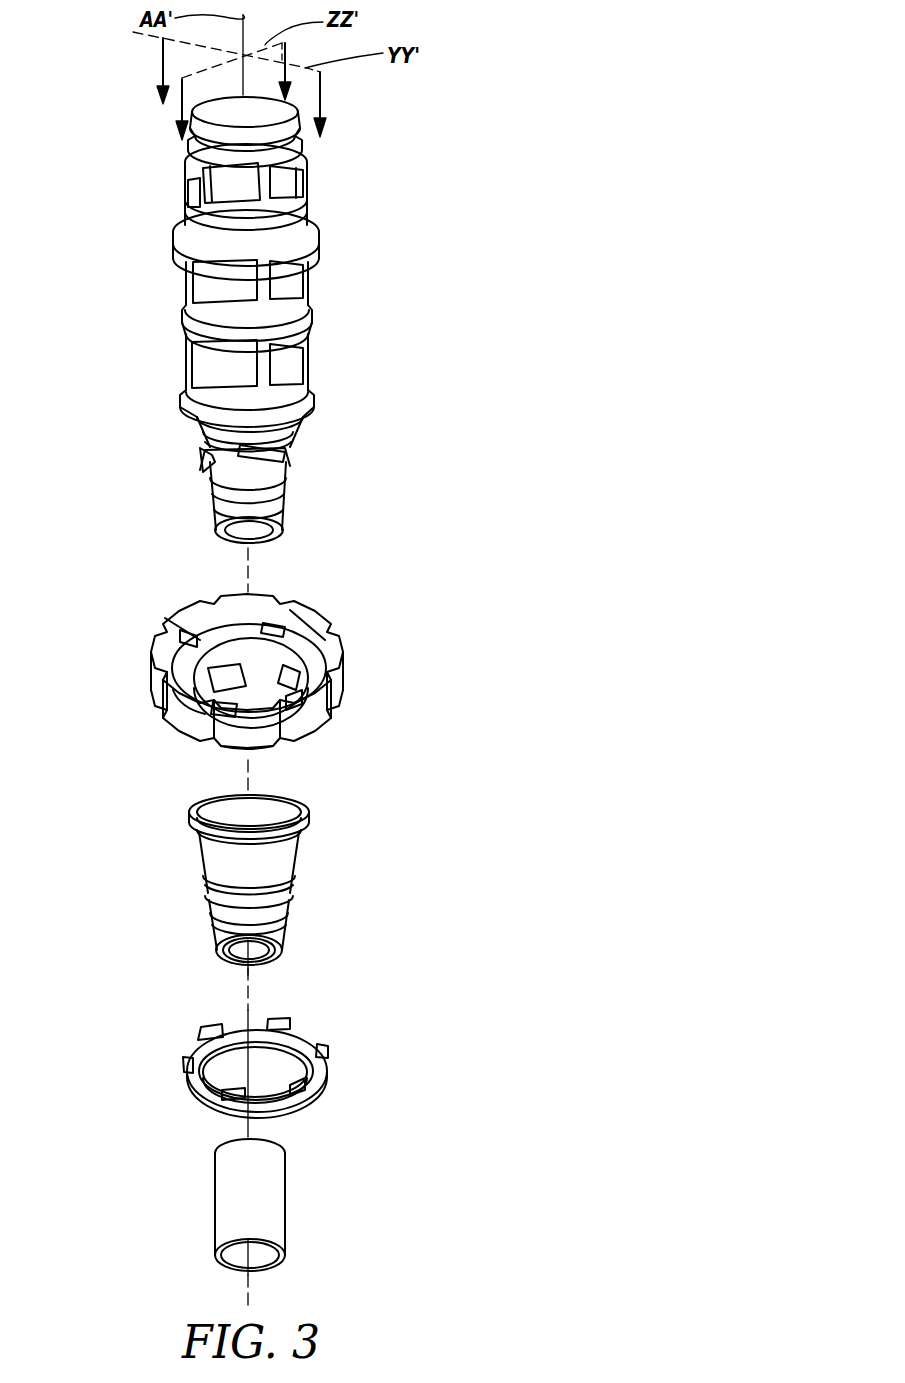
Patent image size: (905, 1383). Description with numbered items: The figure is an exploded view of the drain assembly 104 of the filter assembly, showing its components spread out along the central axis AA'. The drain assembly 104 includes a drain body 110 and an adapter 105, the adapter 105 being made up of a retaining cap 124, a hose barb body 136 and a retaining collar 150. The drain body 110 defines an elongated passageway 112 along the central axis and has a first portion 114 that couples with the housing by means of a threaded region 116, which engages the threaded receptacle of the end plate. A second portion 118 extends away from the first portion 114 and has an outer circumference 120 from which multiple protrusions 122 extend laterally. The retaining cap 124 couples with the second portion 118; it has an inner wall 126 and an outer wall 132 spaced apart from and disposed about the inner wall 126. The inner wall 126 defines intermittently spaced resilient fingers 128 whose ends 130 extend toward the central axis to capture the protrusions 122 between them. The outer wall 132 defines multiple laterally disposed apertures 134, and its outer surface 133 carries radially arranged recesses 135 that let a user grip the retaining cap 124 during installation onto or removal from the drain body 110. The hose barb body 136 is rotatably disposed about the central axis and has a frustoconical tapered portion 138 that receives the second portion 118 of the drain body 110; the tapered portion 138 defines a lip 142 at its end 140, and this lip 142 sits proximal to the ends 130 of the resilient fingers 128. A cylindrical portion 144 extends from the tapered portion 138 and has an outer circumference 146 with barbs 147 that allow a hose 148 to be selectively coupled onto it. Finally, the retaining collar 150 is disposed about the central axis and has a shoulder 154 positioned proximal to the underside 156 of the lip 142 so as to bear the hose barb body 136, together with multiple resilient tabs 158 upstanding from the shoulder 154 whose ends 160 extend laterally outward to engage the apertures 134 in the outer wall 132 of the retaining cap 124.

The drain assembly 104 is at (315, 1133).
The adapter 105 is at (468, 592).
The drain body 110 is at (125, 97).
The elongated passageway 112 is at (273, 537).
The first portion 114 is at (343, 98).
The threaded region 116 is at (343, 98).
The second portion 118 is at (400, 268).
The outer circumference 120 is at (225, 436).
The protrusions 122 is at (198, 460).
The retaining cap 124 is at (136, 600).
The inner wall 126 is at (197, 647).
The resilient fingers 128 is at (278, 628).
The ends 130 is at (173, 698).
The outer wall 132 is at (273, 735).
The outer surface 133 is at (320, 628).
The apertures 134 is at (293, 602).
The recesses 135 is at (307, 693).
The hose barb body 136 is at (157, 792).
The tapered portion 138 is at (305, 815).
The end 140 is at (198, 845).
The lip 142 is at (192, 806).
The cylindrical portion 144 is at (305, 965).
The outer circumference 146 is at (212, 897).
The barbs 147 is at (287, 928).
The hose 148 is at (223, 1177).
The retaining collar 150 is at (157, 1010).
The shoulder 154 is at (328, 1060).
The underside 156 is at (197, 840).
The resilient tabs 158 is at (222, 1068).
The ends 160 is at (317, 1043).